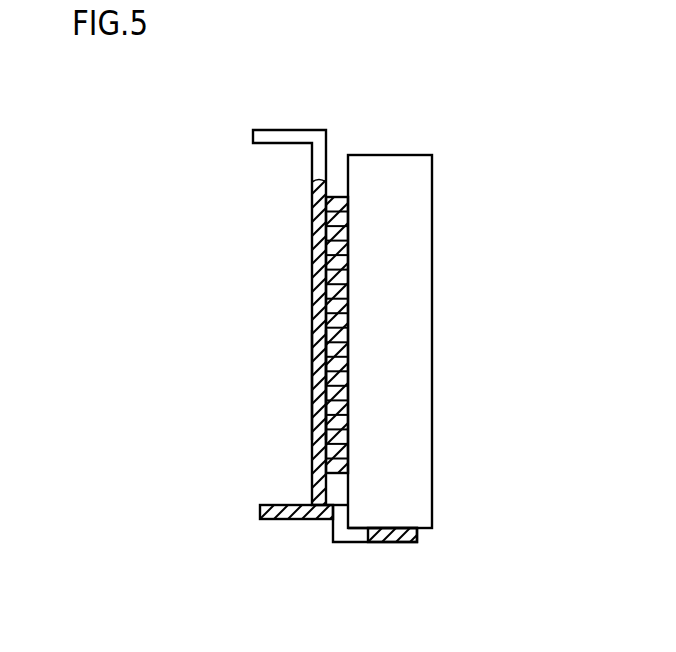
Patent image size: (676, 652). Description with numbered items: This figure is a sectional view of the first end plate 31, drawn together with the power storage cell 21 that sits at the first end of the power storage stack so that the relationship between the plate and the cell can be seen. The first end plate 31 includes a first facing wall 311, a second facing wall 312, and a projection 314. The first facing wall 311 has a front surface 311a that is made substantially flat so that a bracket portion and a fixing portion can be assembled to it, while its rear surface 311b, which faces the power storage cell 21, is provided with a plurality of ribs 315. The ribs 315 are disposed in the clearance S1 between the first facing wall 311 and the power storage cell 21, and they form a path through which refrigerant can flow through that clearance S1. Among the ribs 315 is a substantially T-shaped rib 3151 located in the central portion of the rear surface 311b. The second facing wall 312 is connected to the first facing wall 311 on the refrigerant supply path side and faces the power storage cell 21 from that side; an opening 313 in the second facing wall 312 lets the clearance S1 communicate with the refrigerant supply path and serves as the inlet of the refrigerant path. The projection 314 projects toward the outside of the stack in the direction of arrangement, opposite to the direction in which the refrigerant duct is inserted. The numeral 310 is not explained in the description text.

The first end plate 31 is at (264, 262).
The frame body 310 is at (255, 120).
The first facing wall 311 is at (320, 332).
The front surface 311a is at (340, 386).
The rear surface 311b is at (340, 386).
The substantially T-shaped rib 3151 is at (338, 263).
The ribs 315 is at (337, 197).
The power storage cell 21 is at (387, 155).
The clearance S1 is at (326, 478).
The projection 314 is at (292, 519).
The opening 313 is at (342, 542).
The second facing wall 312 is at (397, 542).